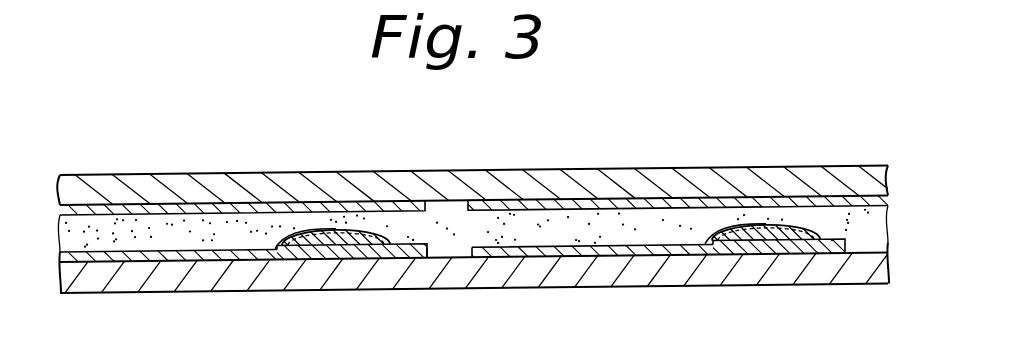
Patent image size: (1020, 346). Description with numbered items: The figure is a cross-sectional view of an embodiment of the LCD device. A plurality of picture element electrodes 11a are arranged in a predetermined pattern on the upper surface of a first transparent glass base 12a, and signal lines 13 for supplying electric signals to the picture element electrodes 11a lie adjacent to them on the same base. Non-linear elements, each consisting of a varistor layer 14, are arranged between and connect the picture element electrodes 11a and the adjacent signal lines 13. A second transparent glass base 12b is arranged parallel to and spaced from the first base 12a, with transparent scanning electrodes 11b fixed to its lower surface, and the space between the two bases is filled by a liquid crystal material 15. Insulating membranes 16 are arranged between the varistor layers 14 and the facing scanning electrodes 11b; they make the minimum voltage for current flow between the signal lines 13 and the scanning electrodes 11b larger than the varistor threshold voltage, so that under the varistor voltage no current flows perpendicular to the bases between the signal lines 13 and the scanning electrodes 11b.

The second transparent glass base 12b is at (243, 186).
The transparent scanning electrodes 11b is at (318, 205).
The liquid crystal material 15 is at (703, 218).
The picture element electrodes 11a is at (230, 254).
The signal lines 13 is at (427, 251).
The varistor layer 14 is at (349, 250).
The insulating membranes 16 is at (295, 238).
The first transparent glass base 12a is at (315, 283).